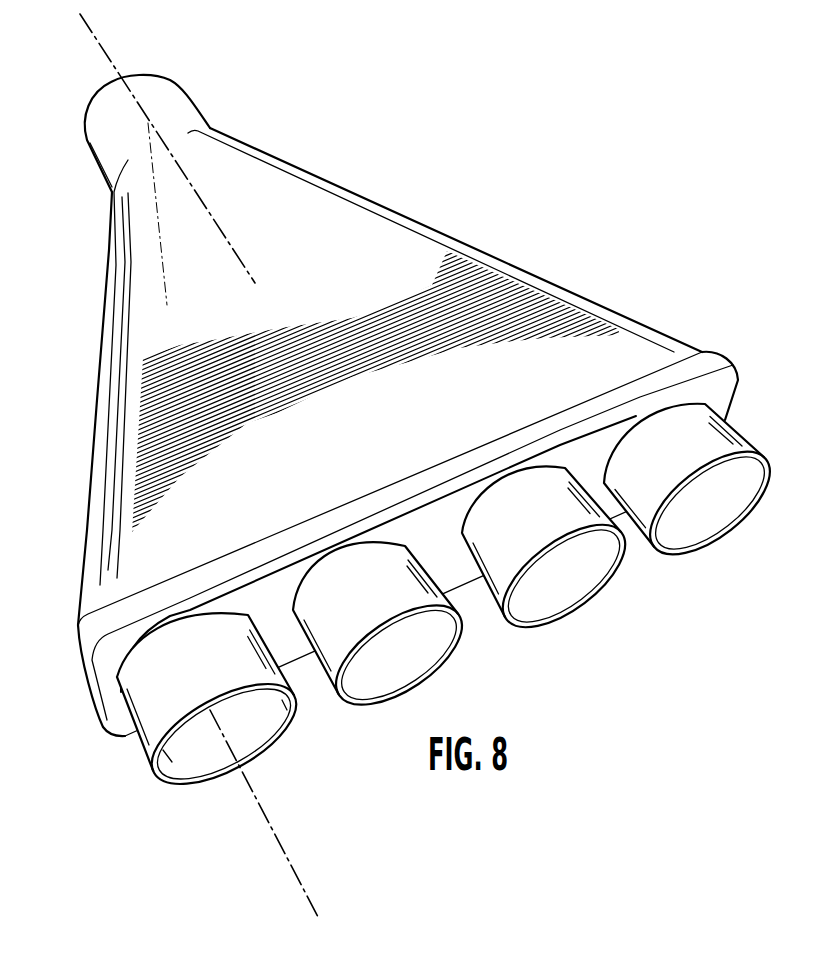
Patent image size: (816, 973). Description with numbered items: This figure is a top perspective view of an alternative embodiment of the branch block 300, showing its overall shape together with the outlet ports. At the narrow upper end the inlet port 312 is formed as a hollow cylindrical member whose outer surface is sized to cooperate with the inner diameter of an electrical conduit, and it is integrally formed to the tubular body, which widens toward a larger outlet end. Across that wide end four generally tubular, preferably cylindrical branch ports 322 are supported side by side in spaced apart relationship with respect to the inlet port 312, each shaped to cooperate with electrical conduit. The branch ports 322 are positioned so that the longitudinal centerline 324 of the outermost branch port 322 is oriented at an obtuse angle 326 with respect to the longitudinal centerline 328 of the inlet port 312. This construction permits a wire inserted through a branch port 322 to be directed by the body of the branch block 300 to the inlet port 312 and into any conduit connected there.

The branch block 300 is at (437, 250).
The inlet port 312 is at (173, 105).
The branch ports 322 is at (155, 732).
The longitudinal centerline of the outermost branch port 324 is at (285, 848).
The obtuse angle 326 is at (196, 230).
The longitudinal centerline of the inlet port 328 is at (100, 50).